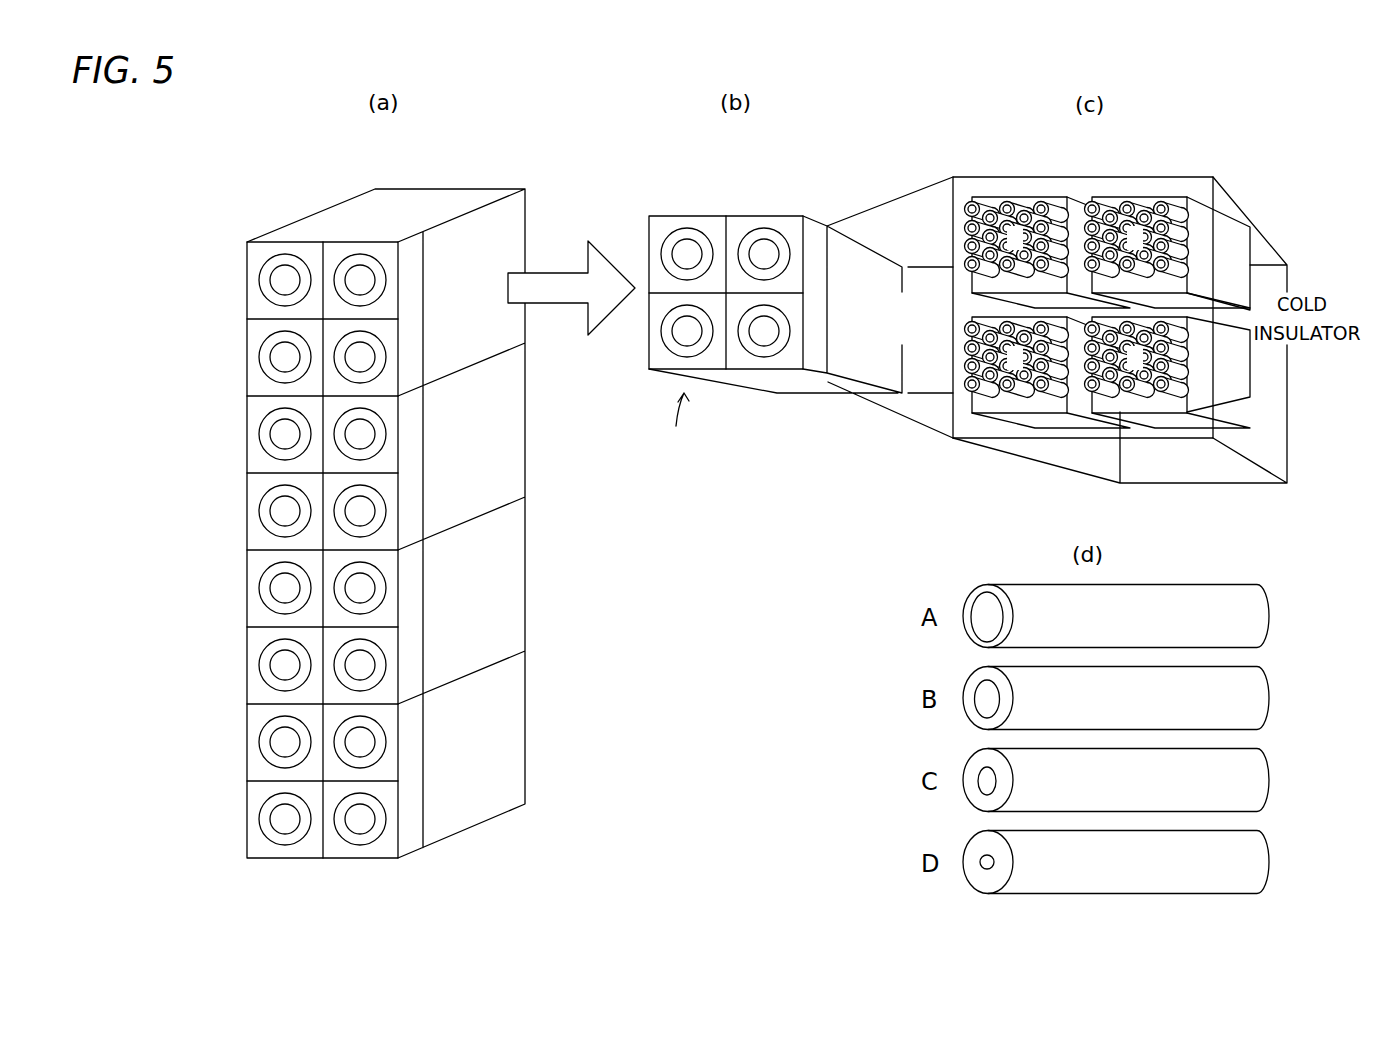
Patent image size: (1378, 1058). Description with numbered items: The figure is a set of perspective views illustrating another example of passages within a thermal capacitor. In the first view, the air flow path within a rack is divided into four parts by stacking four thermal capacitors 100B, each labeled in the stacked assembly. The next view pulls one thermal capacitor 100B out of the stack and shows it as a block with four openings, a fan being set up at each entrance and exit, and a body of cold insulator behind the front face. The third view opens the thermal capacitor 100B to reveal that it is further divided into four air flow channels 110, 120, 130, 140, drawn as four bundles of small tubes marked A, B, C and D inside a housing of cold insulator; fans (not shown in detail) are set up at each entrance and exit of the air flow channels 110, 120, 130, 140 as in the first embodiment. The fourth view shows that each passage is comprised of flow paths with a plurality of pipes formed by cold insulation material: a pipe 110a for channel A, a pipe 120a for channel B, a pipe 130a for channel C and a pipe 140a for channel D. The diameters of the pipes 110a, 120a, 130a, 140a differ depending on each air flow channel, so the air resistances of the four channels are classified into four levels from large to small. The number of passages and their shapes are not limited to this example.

The thermal capacitor 100B is at (247, 319).
The air flow channel 110 is at (1000, 197).
The air flow channel 120 is at (1120, 197).
The air flow channel 130 is at (1048, 413).
The air flow channel 140 is at (1162, 413).
The pipe 110a is at (1269, 612).
The pipe 120a is at (1269, 694).
The pipe 130a is at (1269, 776).
The pipe 140a is at (1269, 858).